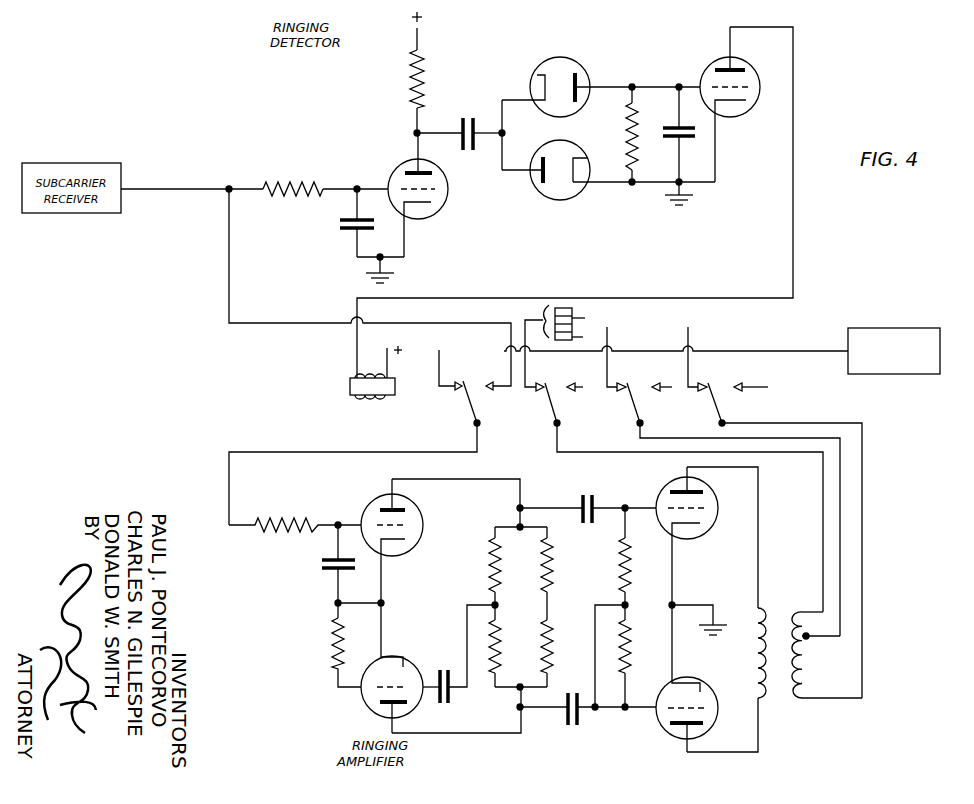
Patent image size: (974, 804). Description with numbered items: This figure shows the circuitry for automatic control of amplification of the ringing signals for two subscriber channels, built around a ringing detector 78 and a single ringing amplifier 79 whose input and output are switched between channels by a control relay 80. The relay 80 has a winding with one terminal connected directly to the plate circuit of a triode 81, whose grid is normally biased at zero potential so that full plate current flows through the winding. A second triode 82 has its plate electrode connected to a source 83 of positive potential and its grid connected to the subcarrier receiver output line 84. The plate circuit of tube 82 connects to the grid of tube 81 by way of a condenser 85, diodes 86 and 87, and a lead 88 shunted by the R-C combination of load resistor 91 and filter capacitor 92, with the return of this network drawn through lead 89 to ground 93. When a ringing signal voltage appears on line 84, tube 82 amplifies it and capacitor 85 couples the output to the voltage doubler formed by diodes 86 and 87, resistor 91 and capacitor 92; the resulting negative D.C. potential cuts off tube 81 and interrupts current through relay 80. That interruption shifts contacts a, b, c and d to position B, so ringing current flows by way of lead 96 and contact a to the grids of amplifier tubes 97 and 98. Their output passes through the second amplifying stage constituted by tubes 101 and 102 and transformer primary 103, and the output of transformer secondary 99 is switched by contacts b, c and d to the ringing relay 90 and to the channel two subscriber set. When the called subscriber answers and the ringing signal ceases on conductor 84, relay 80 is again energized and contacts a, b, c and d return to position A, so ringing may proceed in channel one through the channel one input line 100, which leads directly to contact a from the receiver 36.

The receiver 36 is at (880, 329).
The ringing detector 78 is at (398, 77).
The ringing amplifier 79 is at (563, 729).
The control relay 80 is at (386, 392).
The triode 81 is at (740, 113).
The second triode 82 is at (428, 219).
The source of positive potential 83 is at (422, 19).
The subcarrier receiver output line 84 is at (198, 186).
The condenser 85 is at (471, 113).
The diode 86 is at (568, 59).
The diode 87 is at (548, 200).
The lead 88 is at (606, 86).
The conductor 89 is at (604, 184).
The ringing relay 90 is at (580, 318).
The load resistor 91 is at (625, 150).
The filter capacitor 92 is at (688, 139).
The ground 93 is at (686, 199).
The lead 96 is at (231, 287).
The amplifier tube 97 is at (421, 519).
The amplifier tube 98 is at (400, 665).
The transformer secondary 99 is at (806, 661).
The channel 1 input line 100 is at (750, 353).
The tube 101 is at (700, 533).
The tube 102 is at (667, 729).
The transformer primary 103 is at (752, 641).
The relay contact a is at (480, 406).
The relay contact b is at (565, 406).
The relay contact c is at (643, 406).
The relay contact d is at (725, 404).